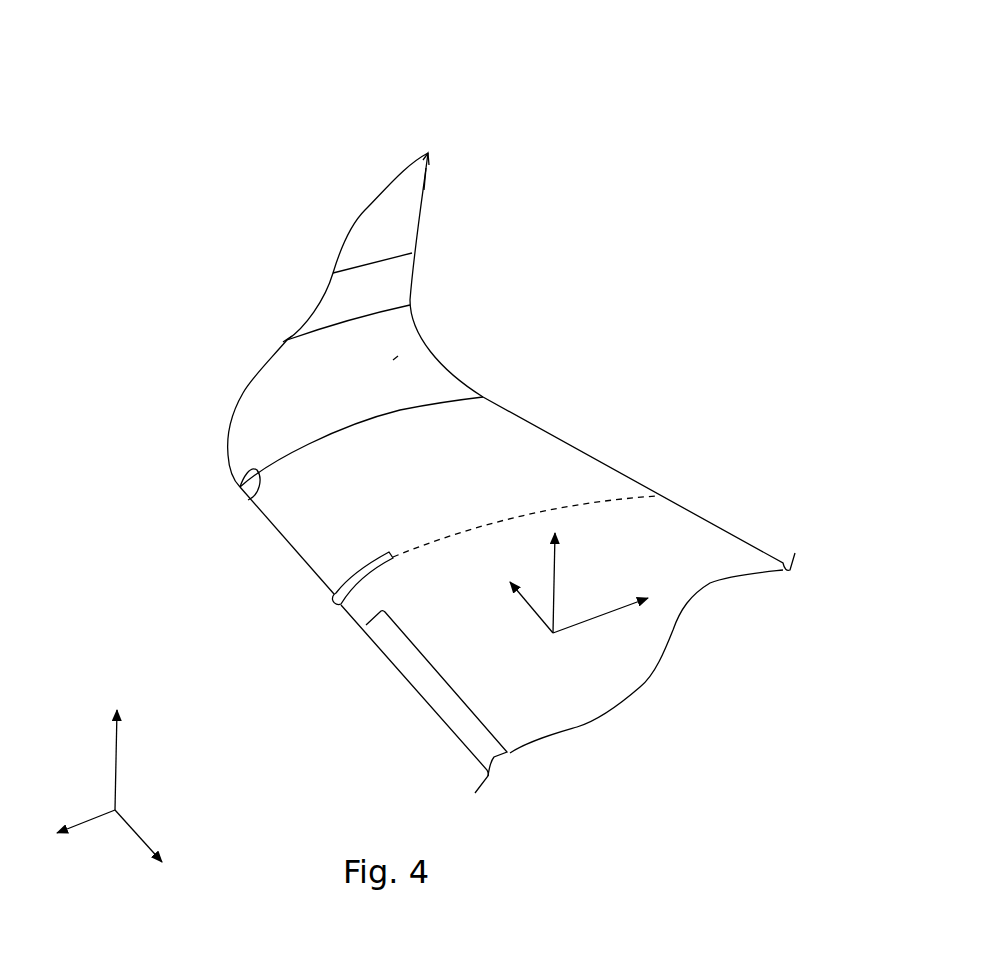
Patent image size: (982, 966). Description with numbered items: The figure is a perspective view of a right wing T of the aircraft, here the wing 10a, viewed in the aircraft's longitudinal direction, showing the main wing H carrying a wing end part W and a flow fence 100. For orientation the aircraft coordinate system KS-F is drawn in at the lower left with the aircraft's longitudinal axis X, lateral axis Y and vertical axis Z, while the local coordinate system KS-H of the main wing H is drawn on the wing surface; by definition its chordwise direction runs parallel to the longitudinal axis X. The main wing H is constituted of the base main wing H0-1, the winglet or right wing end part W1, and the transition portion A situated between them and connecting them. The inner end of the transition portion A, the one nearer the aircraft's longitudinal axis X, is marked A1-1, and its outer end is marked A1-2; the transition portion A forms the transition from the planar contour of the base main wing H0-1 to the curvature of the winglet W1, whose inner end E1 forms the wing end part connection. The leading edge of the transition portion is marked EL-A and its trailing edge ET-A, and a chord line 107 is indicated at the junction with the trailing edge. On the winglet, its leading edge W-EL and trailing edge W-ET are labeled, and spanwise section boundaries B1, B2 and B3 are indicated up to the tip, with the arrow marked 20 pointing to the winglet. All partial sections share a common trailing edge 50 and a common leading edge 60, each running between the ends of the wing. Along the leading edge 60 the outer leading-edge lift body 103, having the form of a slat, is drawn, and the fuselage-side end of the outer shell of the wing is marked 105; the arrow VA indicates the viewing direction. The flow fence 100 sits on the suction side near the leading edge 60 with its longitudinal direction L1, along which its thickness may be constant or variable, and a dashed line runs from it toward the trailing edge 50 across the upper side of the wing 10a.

The wing end part W is at (423, 48).
The right wing end part W1 is at (433, 134).
The winglet tip region B3 is at (423, 160).
The winglet upper section B2 is at (422, 173).
The winglet leading edge W-EL is at (347, 238).
The winglet trailing edge W-ET is at (420, 224).
The winglet lower section B1 is at (402, 280).
The rudder unit 20 is at (393, 360).
The inner end E1 is at (283, 342).
The outer end of the transition portion A1-2 is at (300, 330).
The transition portion A is at (243, 393).
The transition region leading edge EL-A is at (227, 433).
The transition region trailing edge ET-A is at (450, 362).
The wing chord line 107 is at (457, 398).
The trailing edge 50 is at (598, 460).
The inner end of the transition portion A1-1 is at (248, 500).
The base main wing H0-1 is at (300, 530).
The flow fence 100 is at (391, 545).
The coordinate system of the main wing KS-H is at (595, 553).
The leading edge 60 is at (313, 577).
The longitudinal direction of the flow fence L1 is at (358, 563).
The wing 10a is at (489, 626).
The direction of view VA is at (367, 653).
The fuselage-side end of the outer shell 105 is at (725, 605).
The aircraft coordinate system KS-F is at (146, 773).
The outer leading-edge lift body 103 is at (433, 687).
The aircraft's longitudinal axis X is at (86, 836).
The aircraft's lateral axis Y is at (143, 836).
The aircraft's vertical axis Z is at (107, 760).
The wing T is at (163, 148).
The main wing H is at (208, 265).